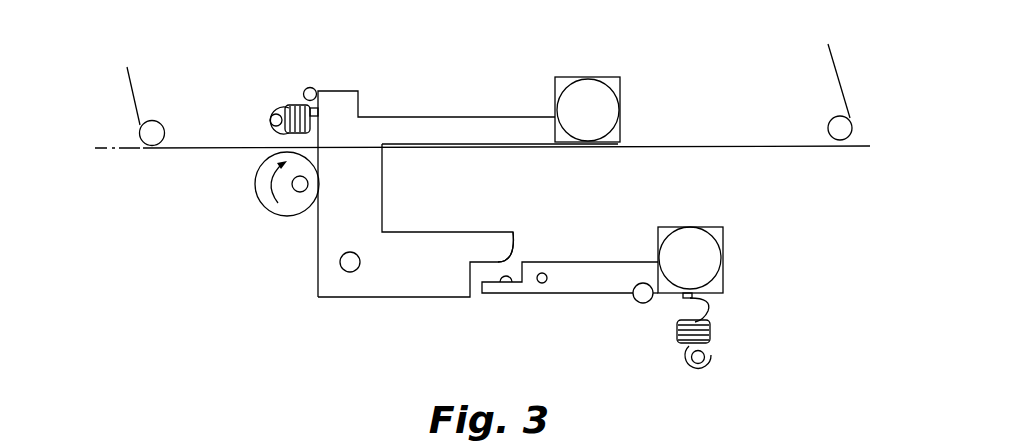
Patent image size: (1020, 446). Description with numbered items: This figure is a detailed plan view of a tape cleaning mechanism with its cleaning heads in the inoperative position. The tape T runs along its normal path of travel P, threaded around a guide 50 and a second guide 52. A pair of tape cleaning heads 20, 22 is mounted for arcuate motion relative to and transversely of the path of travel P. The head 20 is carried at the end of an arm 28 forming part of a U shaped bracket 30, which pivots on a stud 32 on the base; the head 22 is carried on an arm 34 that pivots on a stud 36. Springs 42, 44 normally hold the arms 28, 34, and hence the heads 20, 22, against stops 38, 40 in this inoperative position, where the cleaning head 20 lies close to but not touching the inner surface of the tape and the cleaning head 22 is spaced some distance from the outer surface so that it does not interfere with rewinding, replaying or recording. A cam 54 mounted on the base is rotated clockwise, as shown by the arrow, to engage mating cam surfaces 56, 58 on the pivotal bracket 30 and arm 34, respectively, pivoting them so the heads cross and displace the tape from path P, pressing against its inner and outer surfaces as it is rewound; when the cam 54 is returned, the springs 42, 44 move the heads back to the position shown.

The tape cleaning head 20 is at (587, 109).
The tape cleaning head 22 is at (690, 260).
The arm 28 is at (478, 126).
The U shaped bracket 30 is at (420, 240).
The stud 32 is at (340, 266).
The arm 34 is at (600, 268).
The stud 36 is at (546, 284).
The stop 38 is at (315, 88).
The stop 40 is at (640, 304).
The spring 42 is at (290, 103).
The spring 44 is at (712, 328).
The guide 50 is at (831, 120).
The guide 52 is at (163, 125).
The cam 54 is at (276, 218).
The cam surface 56 is at (518, 253).
The cam surface 58 is at (511, 293).
The path of travel P is at (127, 149).
The tape T is at (672, 146).